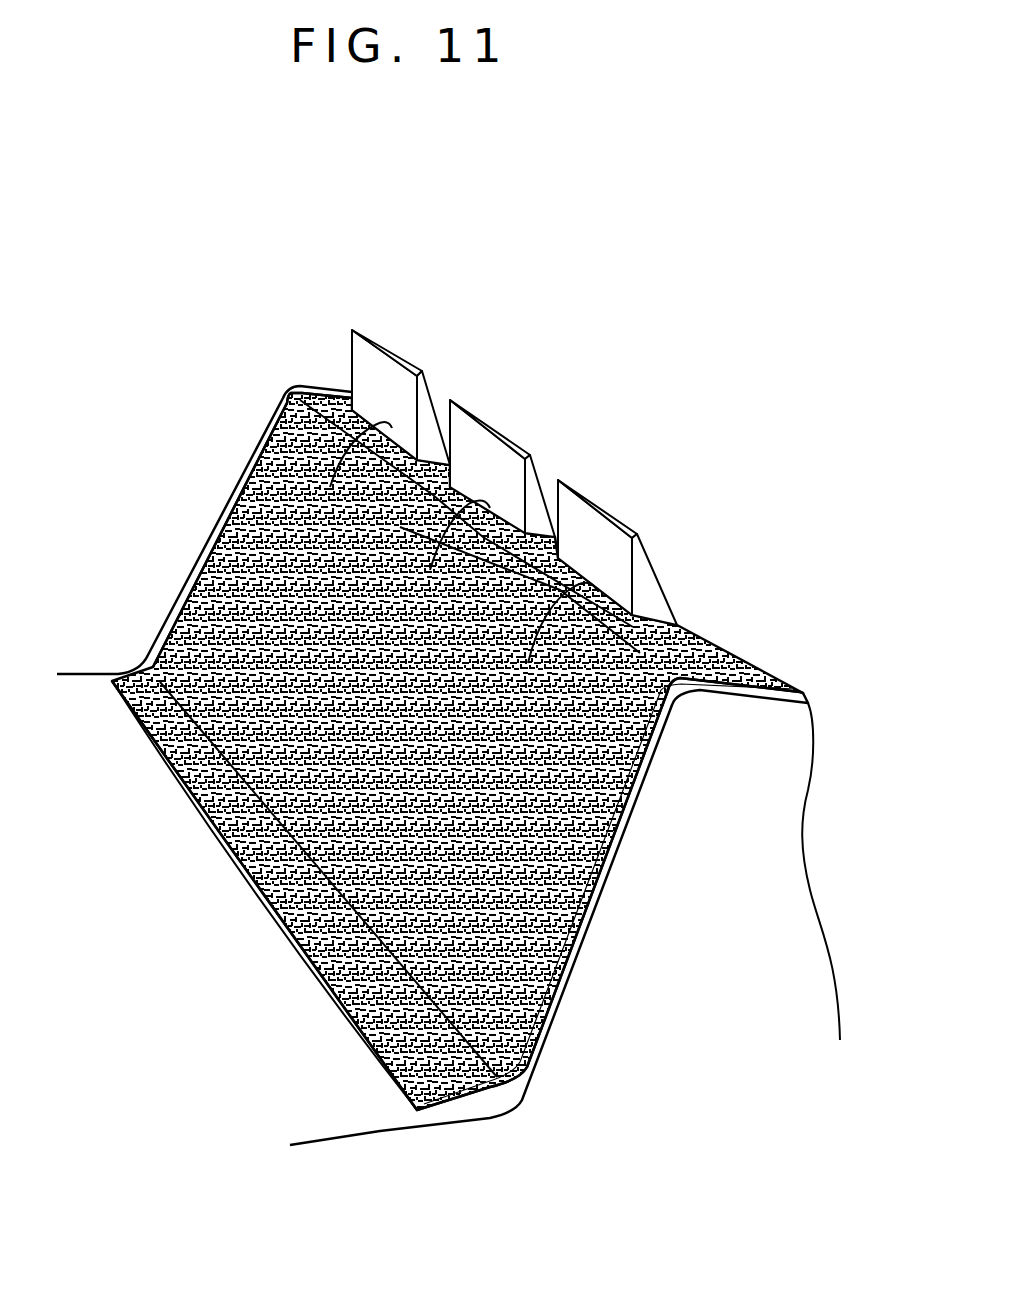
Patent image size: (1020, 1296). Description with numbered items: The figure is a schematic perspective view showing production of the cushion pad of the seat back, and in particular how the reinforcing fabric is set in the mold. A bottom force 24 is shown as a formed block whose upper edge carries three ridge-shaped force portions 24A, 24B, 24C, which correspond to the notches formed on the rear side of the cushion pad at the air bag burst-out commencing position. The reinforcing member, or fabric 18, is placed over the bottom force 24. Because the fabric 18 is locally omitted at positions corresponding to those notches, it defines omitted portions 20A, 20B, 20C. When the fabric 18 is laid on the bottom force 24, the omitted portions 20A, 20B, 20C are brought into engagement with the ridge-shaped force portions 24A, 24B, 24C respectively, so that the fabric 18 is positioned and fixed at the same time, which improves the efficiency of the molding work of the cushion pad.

The reinforcing member (fabric) 18 is at (237, 590).
The omitted portion 20A is at (540, 650).
The omitted portion 20B is at (431, 559).
The omitted portion 20C is at (333, 481).
The bottom force 24 is at (758, 780).
The ridge-shaped force portion 24A is at (613, 520).
The ridge-shaped force portion 24B is at (490, 428).
The ridge-shaped force portion 24C is at (385, 343).